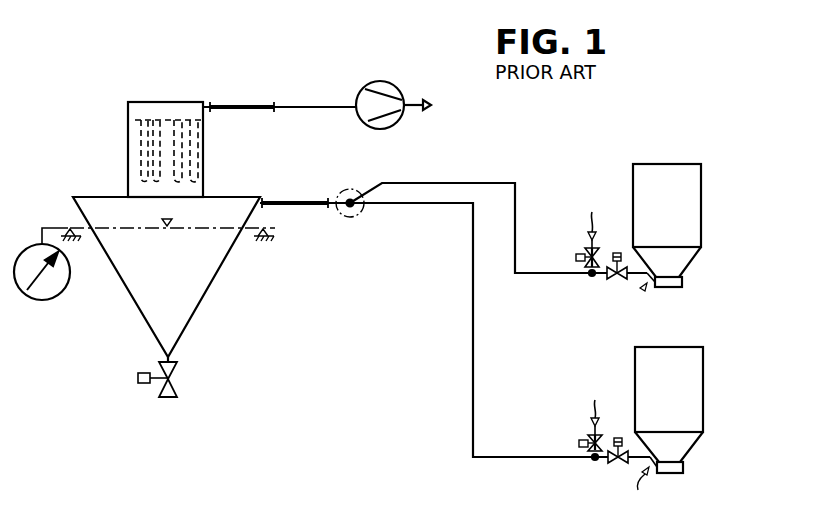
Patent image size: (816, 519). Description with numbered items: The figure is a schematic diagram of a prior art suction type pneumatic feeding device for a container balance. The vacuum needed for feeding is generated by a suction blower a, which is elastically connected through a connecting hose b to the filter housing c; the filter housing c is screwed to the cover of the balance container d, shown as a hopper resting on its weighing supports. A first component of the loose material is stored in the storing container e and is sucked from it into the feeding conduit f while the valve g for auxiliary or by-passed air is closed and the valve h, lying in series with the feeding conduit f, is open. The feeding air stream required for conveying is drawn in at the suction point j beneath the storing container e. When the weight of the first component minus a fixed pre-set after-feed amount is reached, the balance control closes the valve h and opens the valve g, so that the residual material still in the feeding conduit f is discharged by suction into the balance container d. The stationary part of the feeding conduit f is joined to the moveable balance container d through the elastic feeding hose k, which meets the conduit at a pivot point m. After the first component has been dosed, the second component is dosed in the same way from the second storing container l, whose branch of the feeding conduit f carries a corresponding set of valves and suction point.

The suction blower a is at (393, 84).
The connecting hose b is at (255, 107).
The filter housing c is at (138, 130).
The balance container d is at (206, 277).
The storing container e is at (686, 220).
The feeding conduit f is at (490, 183).
The valve for auxiliary air g is at (589, 250).
The valve h is at (613, 279).
The suction point j is at (645, 289).
The elastic feeding hose k is at (298, 203).
The storing container l is at (690, 402).
The pivot joint m is at (356, 214).